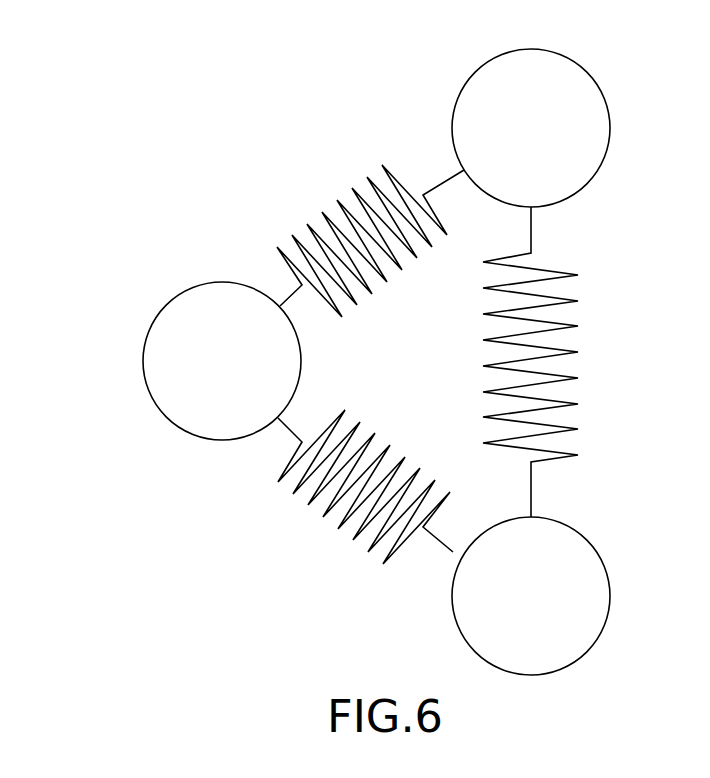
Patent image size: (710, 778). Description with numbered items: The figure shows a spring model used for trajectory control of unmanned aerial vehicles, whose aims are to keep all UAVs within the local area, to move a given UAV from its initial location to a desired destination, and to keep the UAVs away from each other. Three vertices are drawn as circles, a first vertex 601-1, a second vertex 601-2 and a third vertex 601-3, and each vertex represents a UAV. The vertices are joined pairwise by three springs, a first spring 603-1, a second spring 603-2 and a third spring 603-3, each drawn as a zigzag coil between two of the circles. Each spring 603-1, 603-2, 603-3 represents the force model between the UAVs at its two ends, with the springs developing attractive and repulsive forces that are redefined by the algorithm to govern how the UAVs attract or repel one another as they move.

The vertex 601-1 is at (491, 142).
The vertex 601-2 is at (182, 375).
The vertex 601-3 is at (491, 610).
The spring 603-1 is at (567, 273).
The spring 603-2 is at (344, 409).
The spring 603-3 is at (358, 196).